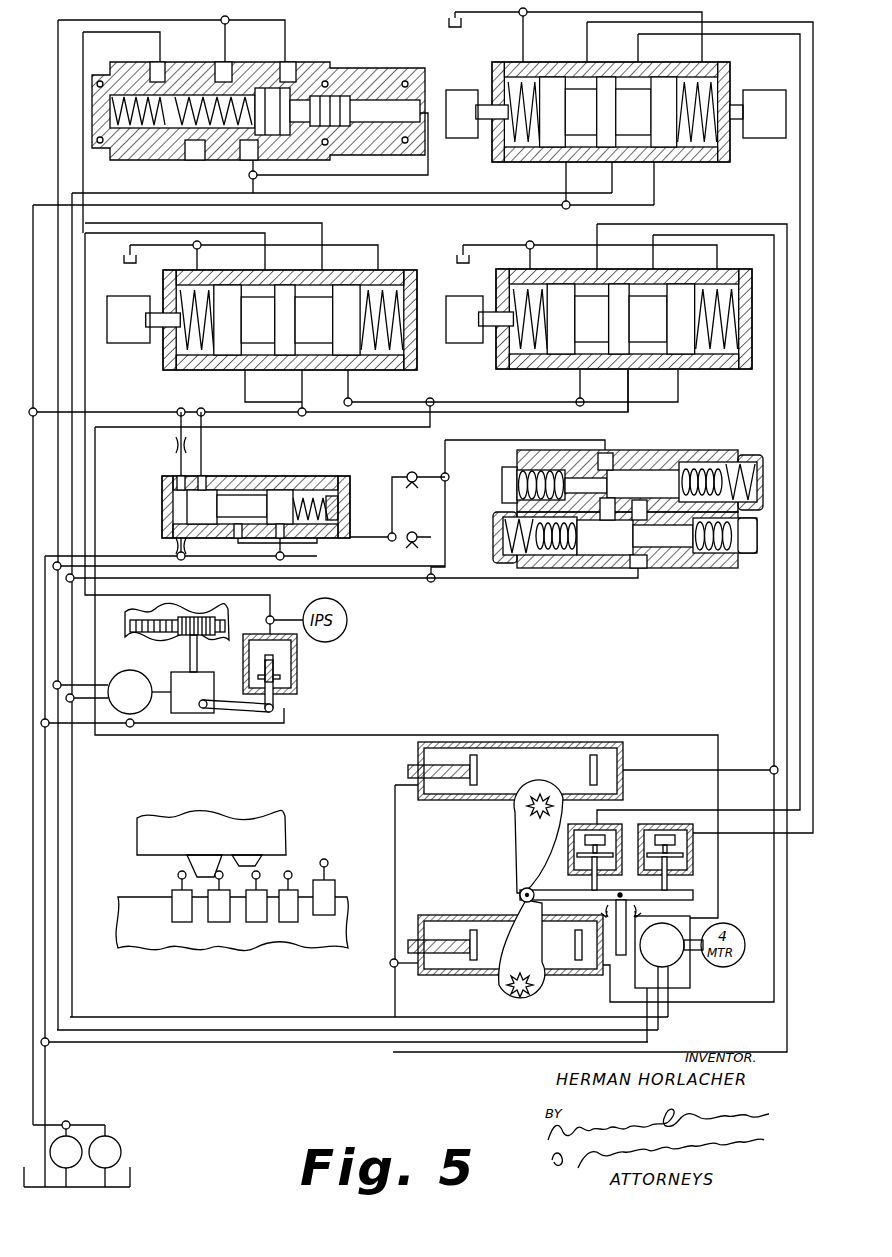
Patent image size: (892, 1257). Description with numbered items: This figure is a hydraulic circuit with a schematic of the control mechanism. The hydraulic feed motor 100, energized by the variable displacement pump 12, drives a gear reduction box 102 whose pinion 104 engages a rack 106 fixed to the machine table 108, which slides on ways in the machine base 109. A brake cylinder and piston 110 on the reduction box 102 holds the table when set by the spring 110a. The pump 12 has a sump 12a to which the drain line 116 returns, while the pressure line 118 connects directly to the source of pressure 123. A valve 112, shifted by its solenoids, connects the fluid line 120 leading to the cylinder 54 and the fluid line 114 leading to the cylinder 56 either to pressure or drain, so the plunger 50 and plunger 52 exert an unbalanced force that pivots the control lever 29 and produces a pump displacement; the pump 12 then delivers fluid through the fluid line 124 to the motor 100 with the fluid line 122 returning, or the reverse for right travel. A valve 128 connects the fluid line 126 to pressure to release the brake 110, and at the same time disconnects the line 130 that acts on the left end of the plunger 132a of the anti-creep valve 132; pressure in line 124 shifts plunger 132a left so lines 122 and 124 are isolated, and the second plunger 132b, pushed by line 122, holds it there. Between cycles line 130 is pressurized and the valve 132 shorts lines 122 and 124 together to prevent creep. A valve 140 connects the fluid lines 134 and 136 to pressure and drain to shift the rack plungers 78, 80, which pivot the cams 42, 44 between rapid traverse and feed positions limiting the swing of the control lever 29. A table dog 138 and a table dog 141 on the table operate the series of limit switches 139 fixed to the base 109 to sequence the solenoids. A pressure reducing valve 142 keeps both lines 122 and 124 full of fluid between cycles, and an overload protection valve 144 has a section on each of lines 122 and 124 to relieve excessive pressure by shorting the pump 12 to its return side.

The variable displacement pump 12 is at (671, 982).
The sump 12a is at (690, 985).
The control lever 29 is at (695, 896).
The cam 42 is at (541, 849).
The cam 44 is at (534, 954).
The plunger 50 is at (580, 890).
The plunger 52 is at (690, 888).
The cylinder 54 is at (600, 815).
The cylinder 56 is at (696, 868).
The rack plunger 78 is at (530, 781).
The rack plunger 80 is at (500, 951).
The hydraulic feed motor 100 is at (145, 702).
The gear reduction box 102 is at (208, 694).
The pinion 104 is at (185, 640).
The rack 106 is at (142, 642).
The machine table 108 is at (220, 612).
The machine base 109 is at (160, 941).
The brake cylinder and piston 110 is at (195, 680).
The spring 110a is at (281, 678).
The valve 112 is at (580, 60).
The fluid line 114 is at (729, 22).
The drain line 116 is at (508, 195).
The pressure line 118 is at (141, 413).
The fluid line 120 is at (787, 41).
The fluid line 122 is at (222, 193).
The source of pressure 123 is at (105, 1118).
The fluid line 124 is at (195, 22).
The fluid line 126 is at (86, 281).
The valve 128 is at (213, 372).
The line 130 is at (146, 32).
The anti-creep valve 132 is at (258, 109).
The plunger 132a is at (186, 152).
The second plunger 132b is at (332, 98).
The fluid line 134 is at (721, 226).
The fluid line 136 is at (770, 238).
The table dog 138 is at (210, 855).
The limit switches 139 is at (217, 922).
The valve 140 is at (552, 380).
The table dog 141 is at (284, 847).
The pressure reducing valve 142 is at (294, 473).
The overload protection valve 144 is at (687, 450).